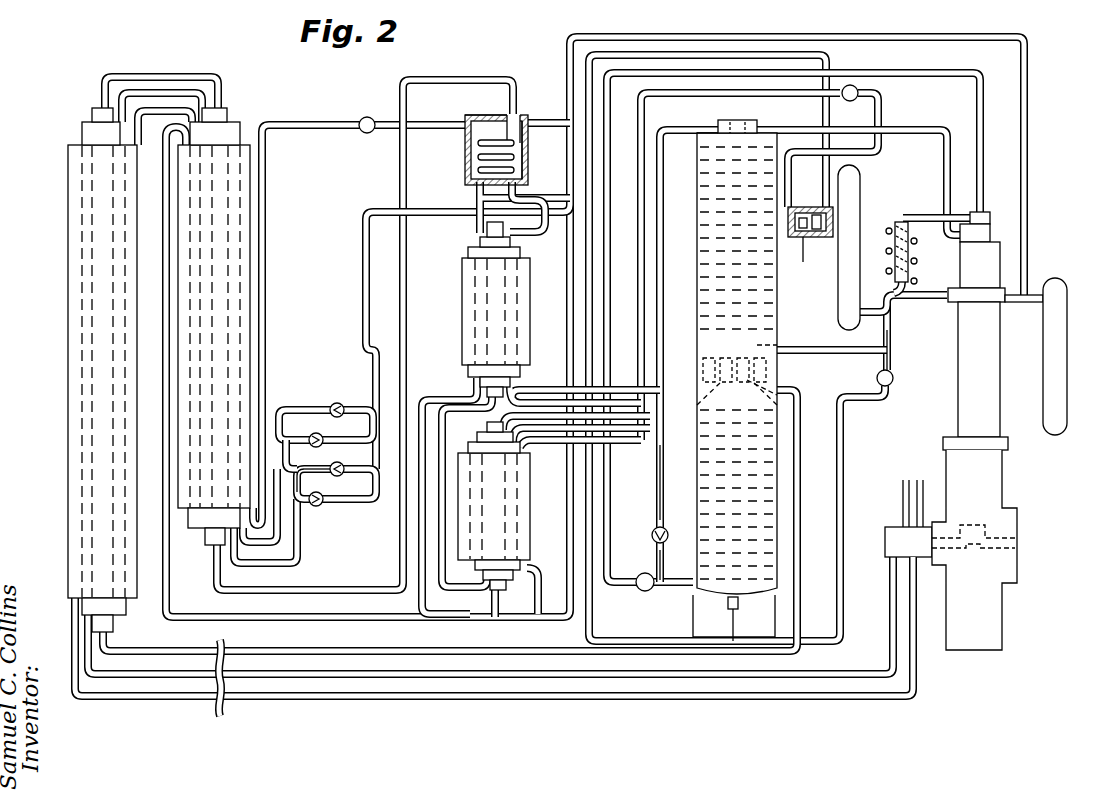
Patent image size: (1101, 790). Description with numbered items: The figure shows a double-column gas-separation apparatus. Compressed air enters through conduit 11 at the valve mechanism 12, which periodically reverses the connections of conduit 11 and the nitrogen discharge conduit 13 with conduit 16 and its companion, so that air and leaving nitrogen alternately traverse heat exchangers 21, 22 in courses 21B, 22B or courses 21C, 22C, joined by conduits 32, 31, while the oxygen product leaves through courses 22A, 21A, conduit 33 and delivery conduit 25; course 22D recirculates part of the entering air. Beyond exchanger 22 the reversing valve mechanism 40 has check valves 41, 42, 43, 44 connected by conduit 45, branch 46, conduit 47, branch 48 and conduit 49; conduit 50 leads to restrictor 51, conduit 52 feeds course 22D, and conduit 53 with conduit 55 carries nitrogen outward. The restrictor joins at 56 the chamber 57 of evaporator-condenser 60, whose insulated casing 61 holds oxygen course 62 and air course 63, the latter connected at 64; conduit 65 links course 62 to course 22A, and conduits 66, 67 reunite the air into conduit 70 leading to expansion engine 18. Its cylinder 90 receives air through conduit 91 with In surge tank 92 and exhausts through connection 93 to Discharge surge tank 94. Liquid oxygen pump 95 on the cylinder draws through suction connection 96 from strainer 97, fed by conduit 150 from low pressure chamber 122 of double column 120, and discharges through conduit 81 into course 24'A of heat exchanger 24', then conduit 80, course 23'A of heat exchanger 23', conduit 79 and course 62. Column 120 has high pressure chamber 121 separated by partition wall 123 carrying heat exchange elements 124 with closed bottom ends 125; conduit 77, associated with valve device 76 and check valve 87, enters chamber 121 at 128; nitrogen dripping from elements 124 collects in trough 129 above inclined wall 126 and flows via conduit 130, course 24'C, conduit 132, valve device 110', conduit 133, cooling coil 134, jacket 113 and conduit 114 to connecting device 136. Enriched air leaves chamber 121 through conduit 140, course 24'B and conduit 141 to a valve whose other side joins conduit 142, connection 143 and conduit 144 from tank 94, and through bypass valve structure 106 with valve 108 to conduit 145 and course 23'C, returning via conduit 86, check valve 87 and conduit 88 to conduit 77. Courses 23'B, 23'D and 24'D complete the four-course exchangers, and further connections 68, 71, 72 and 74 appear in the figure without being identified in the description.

The conduit 11 is at (902, 484).
The valve mechanism 12 is at (883, 549).
The conduit 13 is at (917, 504).
The conduit 16 is at (916, 683).
The expansion engine 18 is at (1000, 470).
The heat exchanger 21 is at (66, 302).
The course 21A is at (100, 204).
The course 21B is at (92, 232).
The course 21C is at (78, 262).
The heat exchanger 22 is at (252, 270).
The course 22A is at (218, 156).
The course 22B is at (228, 180).
The course 22C is at (238, 203).
The fourth course 22D is at (248, 226).
The heat exchanger 23' is at (561, 312).
The course 23'A is at (462, 311).
The passage 23'B is at (453, 311).
The course 23'C is at (447, 311).
The passage 23'D is at (468, 311).
The heat exchanger 24' is at (554, 516).
The course 24'A is at (520, 506).
The course 24'B is at (524, 506).
The course 24'C is at (533, 506).
The passage 24'D is at (539, 516).
The conduit 25 is at (226, 716).
The conduit 31 is at (165, 112).
The conduit 32 is at (152, 88).
The conduit 33 is at (197, 74).
The automatic reversing valve mechanism 40 is at (336, 508).
The check valve 41 is at (316, 507).
The check valve 42 is at (338, 477).
The check valve 43 is at (323, 442).
The check valve 44 is at (338, 402).
The conduit 45 is at (298, 560).
The branch 46 is at (306, 500).
The conduit 47 is at (280, 472).
The branch 48 is at (292, 441).
The conduit 49 is at (324, 440).
The conduit 50 is at (268, 293).
The restrictor device 51 is at (370, 118).
The conduit 52 is at (312, 126).
The conduit 53 is at (370, 296).
The conduit 55 is at (377, 500).
The connection 56 is at (470, 120).
The chamber 57 is at (495, 118).
The evaporator-condenser 60 is at (532, 172).
The casing 61 is at (528, 150).
The oxygen conducting course 62 is at (476, 157).
The air conducting course 63 is at (476, 170).
The connection 64 is at (476, 143).
The conduit 65 is at (500, 78).
The conduit 66 is at (170, 590).
The conduit 67 is at (545, 120).
The pipe 68 is at (446, 438).
The conduit 70 is at (568, 38).
The pipe 71 is at (657, 250).
The tank top 72 is at (718, 135).
The pipe 74 is at (548, 226).
The valve device 76 is at (640, 590).
The conduit 77 is at (684, 605).
The conduit 79 is at (476, 233).
The conduit 80 is at (414, 600).
The conduit 81 is at (983, 152).
The conduit 86 is at (656, 482).
The check valve 87 is at (656, 530).
The conduit 88 is at (656, 554).
The cylinder 90 is at (1000, 272).
The conduit 91 is at (1027, 303).
The In surge tank 92 is at (1043, 374).
The discharge connection 93 is at (928, 298).
The Discharge surge tank 94 is at (857, 236).
The liquid oxygen pump 95 is at (986, 212).
The suction connection 96 is at (919, 214).
The strainer 97 is at (894, 278).
The bypass valve structure 106 is at (822, 245).
The valve 108 is at (803, 231).
The valve device 110' is at (905, 379).
The jacket 113 is at (976, 243).
The conduit 114 is at (944, 128).
The double column 120 is at (782, 330).
The high pressure chamber 121 is at (770, 495).
The low pressure chamber 122 is at (703, 300).
The partition wall 123 is at (700, 360).
The heat exchange elements 124 is at (777, 360).
The closed bottom ends 125 is at (780, 386).
The inclined annular wall 126 is at (700, 385).
The communication 128 is at (695, 600).
The annular trough 129 is at (782, 393).
The conduit 130 is at (800, 446).
The conduit 132 is at (843, 600).
The conduit 133 is at (884, 340).
The cooling coil 134 is at (917, 262).
The connecting device 136 is at (758, 130).
The conduit 140 is at (780, 660).
The conduit 141 is at (638, 336).
The conduit 142 is at (880, 122).
The connection 143 is at (795, 206).
The conduit 144 is at (826, 217).
The conduit 145 is at (836, 58).
The conduit 150 is at (820, 352).